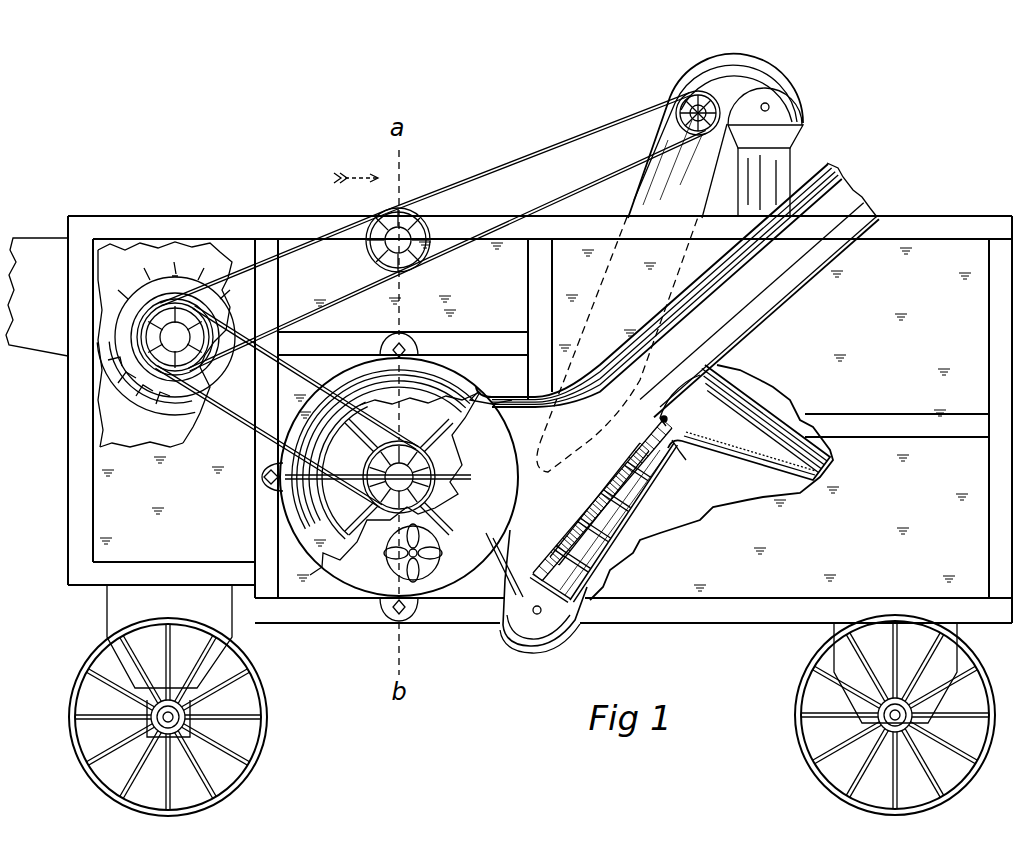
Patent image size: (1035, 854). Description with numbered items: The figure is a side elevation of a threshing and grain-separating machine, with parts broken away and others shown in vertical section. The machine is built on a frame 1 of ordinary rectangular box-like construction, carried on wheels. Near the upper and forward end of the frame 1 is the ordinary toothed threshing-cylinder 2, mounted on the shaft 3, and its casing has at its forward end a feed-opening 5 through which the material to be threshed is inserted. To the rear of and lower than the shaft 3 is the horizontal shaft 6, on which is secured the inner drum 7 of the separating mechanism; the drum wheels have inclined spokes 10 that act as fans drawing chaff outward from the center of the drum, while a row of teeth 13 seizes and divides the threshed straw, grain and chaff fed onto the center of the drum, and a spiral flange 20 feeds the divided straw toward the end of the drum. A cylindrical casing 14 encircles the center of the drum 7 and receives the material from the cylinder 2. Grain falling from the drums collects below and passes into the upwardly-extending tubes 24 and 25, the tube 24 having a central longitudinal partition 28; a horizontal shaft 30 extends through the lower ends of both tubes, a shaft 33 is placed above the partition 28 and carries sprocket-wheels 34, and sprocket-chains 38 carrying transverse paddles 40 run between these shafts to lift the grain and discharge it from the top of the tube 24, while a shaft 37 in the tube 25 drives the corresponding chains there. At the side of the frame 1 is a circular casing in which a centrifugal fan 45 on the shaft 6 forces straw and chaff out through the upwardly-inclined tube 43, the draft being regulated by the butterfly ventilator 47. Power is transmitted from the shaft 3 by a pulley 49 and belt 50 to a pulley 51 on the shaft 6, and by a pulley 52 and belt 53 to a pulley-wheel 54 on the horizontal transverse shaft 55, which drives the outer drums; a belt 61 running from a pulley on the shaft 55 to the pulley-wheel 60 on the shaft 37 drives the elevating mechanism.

The frame 1 is at (902, 216).
The toothed threshing-cylinder 2 is at (165, 344).
The cylinder-shaft 3 is at (176, 330).
The feed-opening 5 is at (37, 297).
The horizontal shaft 6 is at (399, 477).
The inner drum 7 is at (399, 460).
The spokes 10 is at (396, 477).
The teeth 13 is at (352, 395).
The cylindrical casing 14 is at (440, 392).
The spiral flange 20 is at (472, 396).
The upwardly-extending tube 24 is at (749, 422).
The upwardly-extending tube 25 is at (670, 263).
The central longitudinal partition 28 is at (623, 514).
The horizontal rotatable shaft 30 is at (536, 615).
The rotatable shaft 33 is at (667, 419).
The sprocket-wheels 34 is at (681, 448).
The horizontal rotatable shaft 37 is at (712, 98).
The sprocket-chains 38 is at (690, 505).
The transverse paddles 40 is at (617, 560).
The upwardly-inclined tube 43 is at (677, 290).
The centrifugal fan 45 is at (240, 526).
The ventilator 47 is at (440, 553).
The pulley 49 is at (168, 375).
The belt 50 is at (230, 428).
The pulley 51 is at (362, 460).
The pulley 52 is at (150, 343).
The belt 53 is at (273, 258).
The pulley-wheel 54 is at (376, 261).
The horizontal transverse shaft 55 is at (420, 218).
The pulley-wheel 60 is at (676, 120).
The belt 61 is at (580, 136).